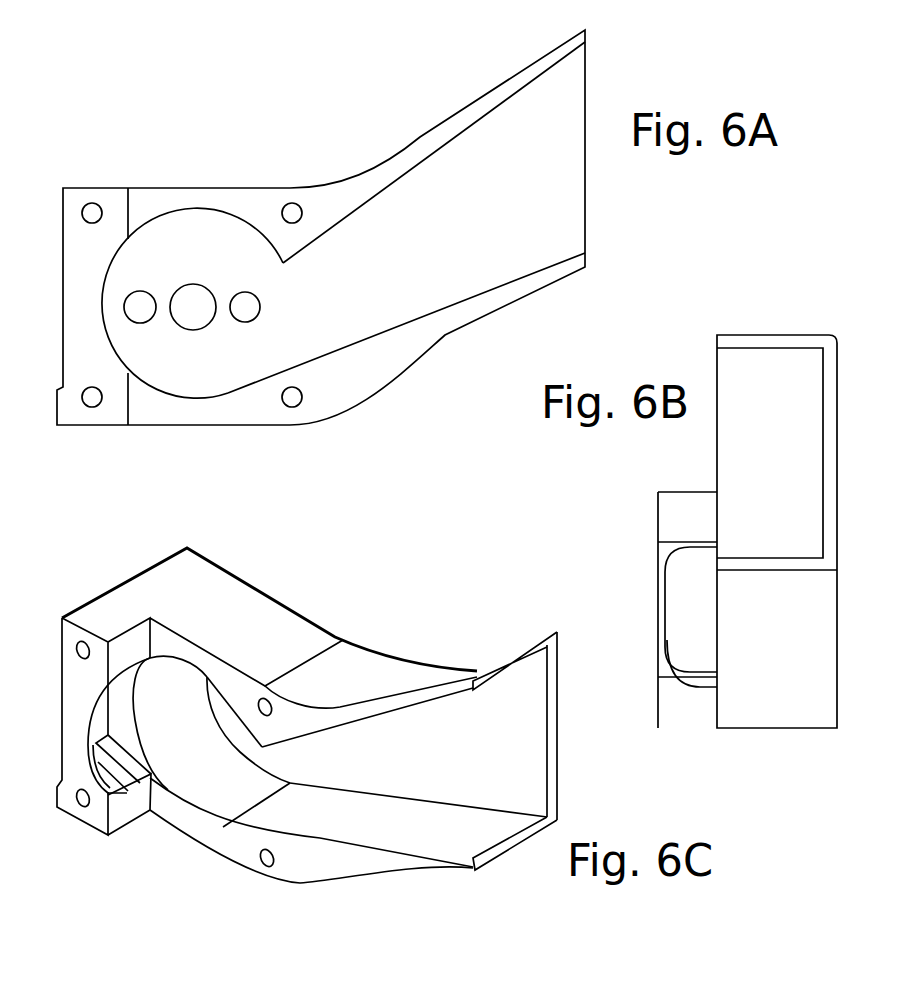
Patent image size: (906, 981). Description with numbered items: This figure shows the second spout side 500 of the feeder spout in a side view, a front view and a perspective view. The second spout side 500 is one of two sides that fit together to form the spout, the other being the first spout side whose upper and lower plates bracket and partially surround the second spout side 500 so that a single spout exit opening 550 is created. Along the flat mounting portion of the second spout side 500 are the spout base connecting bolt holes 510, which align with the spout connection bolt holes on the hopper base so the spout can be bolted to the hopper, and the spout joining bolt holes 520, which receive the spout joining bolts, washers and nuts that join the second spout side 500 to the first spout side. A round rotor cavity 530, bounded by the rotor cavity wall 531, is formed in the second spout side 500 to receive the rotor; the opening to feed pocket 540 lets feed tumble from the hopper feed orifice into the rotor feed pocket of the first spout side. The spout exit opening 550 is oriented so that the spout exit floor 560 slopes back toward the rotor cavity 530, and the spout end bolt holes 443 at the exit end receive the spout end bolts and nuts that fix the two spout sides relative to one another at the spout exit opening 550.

In FIG. 6B, the spout end bolt holes 443 is at (740, 355).
In FIG. 6C, the spout end bolt holes 443 is at (483, 672).
In FIG. 6A, the second spout side 500 is at (360, 187).
In FIG. 6B, the second spout side 500 is at (672, 520).
In FIG. 6C, the second spout side 500 is at (263, 618).
In FIG. 6A, the spout base connecting bolt holes 510 is at (95, 204).
In FIG. 6C, the spout base connecting bolt holes 510 is at (82, 641).
In FIG. 6A, the spout joining bolt holes 520 is at (285, 206).
In FIG. 6C, the spout joining bolt holes 520 is at (262, 698).
In FIG. 6A, the rotor cavity 530 is at (225, 379).
In FIG. 6C, the rotor cavity wall 531 is at (179, 795).
In FIG. 6B, the opening to feed pocket 540 is at (693, 582).
In FIG. 6C, the opening to feed pocket 540 is at (98, 712).
In FIG. 6A, the spout exit opening 550 is at (585, 221).
In FIG. 6B, the spout exit opening 550 is at (780, 358).
In FIG. 6C, the spout exit opening 550 is at (533, 760).
In FIG. 6A, the spout exit floor 560 is at (447, 307).